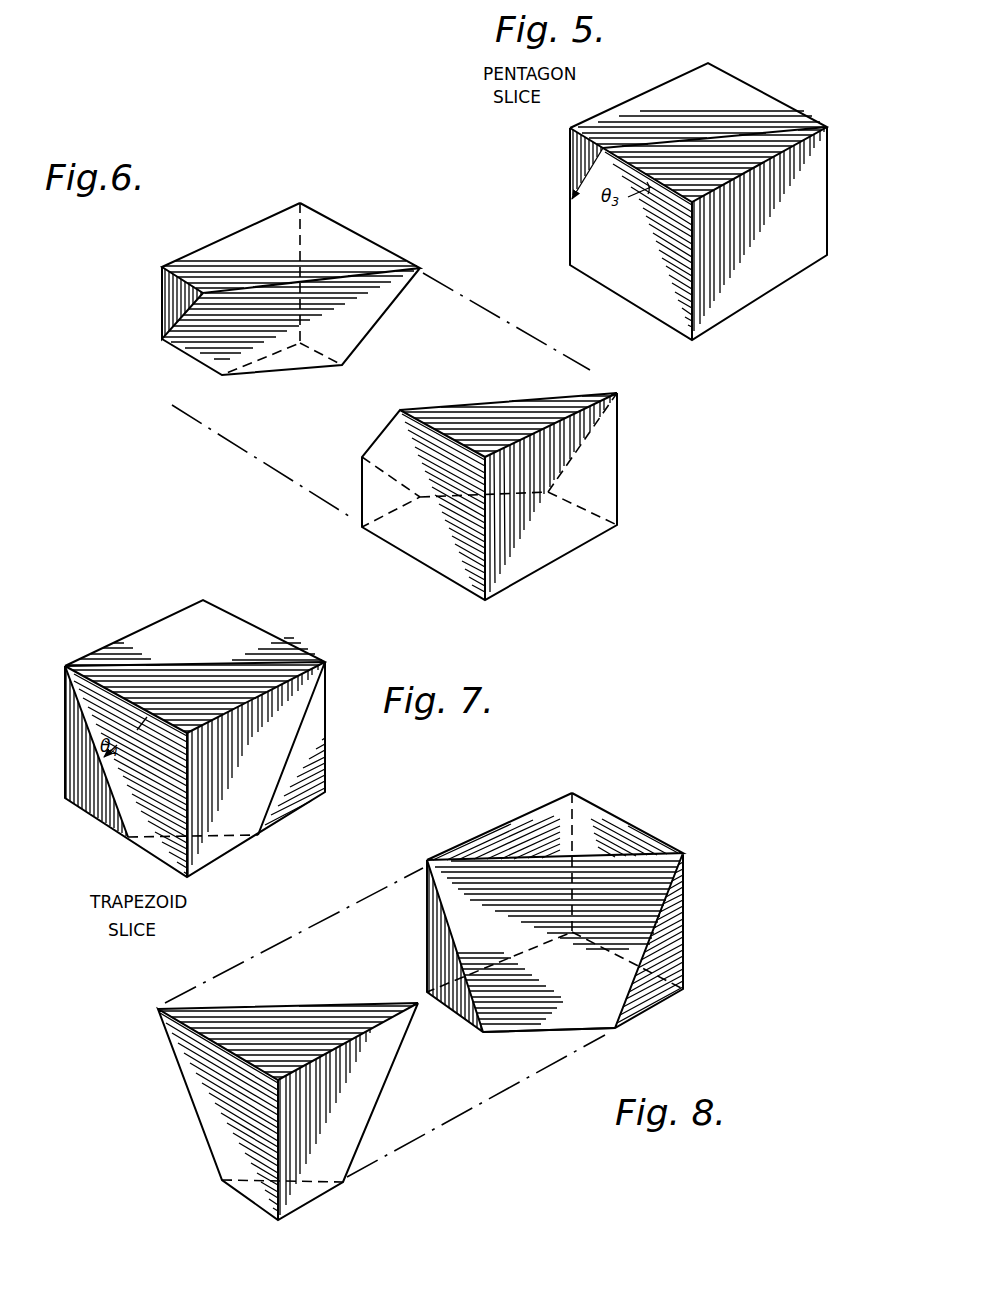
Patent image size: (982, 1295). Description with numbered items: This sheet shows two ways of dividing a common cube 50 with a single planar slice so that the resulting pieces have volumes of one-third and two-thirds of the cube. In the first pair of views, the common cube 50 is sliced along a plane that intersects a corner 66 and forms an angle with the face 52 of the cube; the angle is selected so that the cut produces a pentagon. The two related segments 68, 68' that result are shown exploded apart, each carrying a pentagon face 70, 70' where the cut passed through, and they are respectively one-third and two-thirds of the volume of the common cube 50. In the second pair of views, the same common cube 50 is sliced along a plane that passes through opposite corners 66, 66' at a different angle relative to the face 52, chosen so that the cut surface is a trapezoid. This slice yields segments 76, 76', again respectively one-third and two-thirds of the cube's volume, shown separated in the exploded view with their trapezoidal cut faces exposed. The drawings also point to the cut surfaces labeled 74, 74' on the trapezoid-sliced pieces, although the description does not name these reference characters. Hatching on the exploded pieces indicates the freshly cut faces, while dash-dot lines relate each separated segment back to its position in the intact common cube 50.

In FIG. 5, the common cube 50 is at (767, 82).
In FIG. 7, the common cube 50 is at (143, 614).
In FIG. 5, the face 52 is at (682, 86).
In FIG. 7, the face 52 is at (217, 620).
In FIG. 5, the corner 66 is at (735, 134).
In FIG. 7, the corner 66 is at (238, 736).
In FIG. 7, the opposite corner 66' is at (105, 748).
In FIG. 5, the segment 68 is at (555, 164).
In FIG. 6, the segment 68 is at (149, 311).
In FIG. 5, the segment 68' is at (642, 241).
In FIG. 6, the segment 68' is at (431, 503).
In FIG. 6, the pentagon face 70 is at (301, 289).
In FIG. 6, the pentagon face 70' is at (468, 496).
In FIG. 8, the trapezoid slice piece side face 74 is at (361, 1122).
In FIG. 8, the trapezoid slice cut face 74' is at (546, 1052).
In FIG. 8, the segment 76 is at (283, 1111).
In FIG. 8, the segment 76' is at (599, 912).